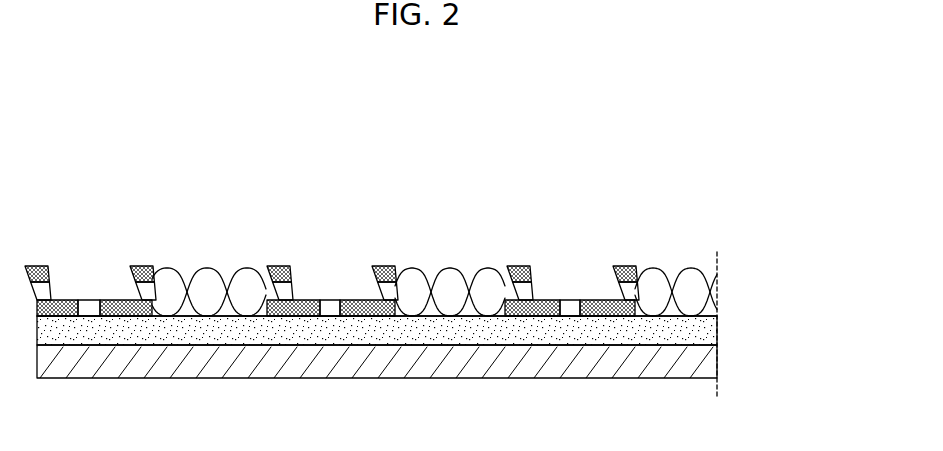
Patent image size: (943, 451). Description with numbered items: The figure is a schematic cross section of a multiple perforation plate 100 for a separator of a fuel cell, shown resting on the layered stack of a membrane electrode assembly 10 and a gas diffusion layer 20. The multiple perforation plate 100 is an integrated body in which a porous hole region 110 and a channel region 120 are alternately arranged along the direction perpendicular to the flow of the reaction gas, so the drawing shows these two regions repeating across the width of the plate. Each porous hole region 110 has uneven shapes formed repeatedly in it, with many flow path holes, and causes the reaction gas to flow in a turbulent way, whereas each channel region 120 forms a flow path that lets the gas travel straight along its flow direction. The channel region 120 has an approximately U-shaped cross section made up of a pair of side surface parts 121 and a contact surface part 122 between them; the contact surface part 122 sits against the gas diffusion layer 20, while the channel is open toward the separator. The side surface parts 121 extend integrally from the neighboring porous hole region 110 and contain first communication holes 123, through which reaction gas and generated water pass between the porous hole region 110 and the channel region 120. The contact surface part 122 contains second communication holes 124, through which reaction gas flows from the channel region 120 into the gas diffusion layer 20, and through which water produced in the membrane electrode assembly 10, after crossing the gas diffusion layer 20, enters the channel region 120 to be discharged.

The membrane electrode assembly 10 is at (705, 365).
The gas diffusion layer 20 is at (705, 335).
The multiple perforation plate 100 is at (417, 302).
The porous hole region 110 is at (434, 267).
The channel region 120 is at (505, 266).
The side surface part 121 is at (516, 267).
The contact surface part 122 is at (603, 312).
The first communication hole 123 is at (600, 288).
The second communication hole 124 is at (571, 312).